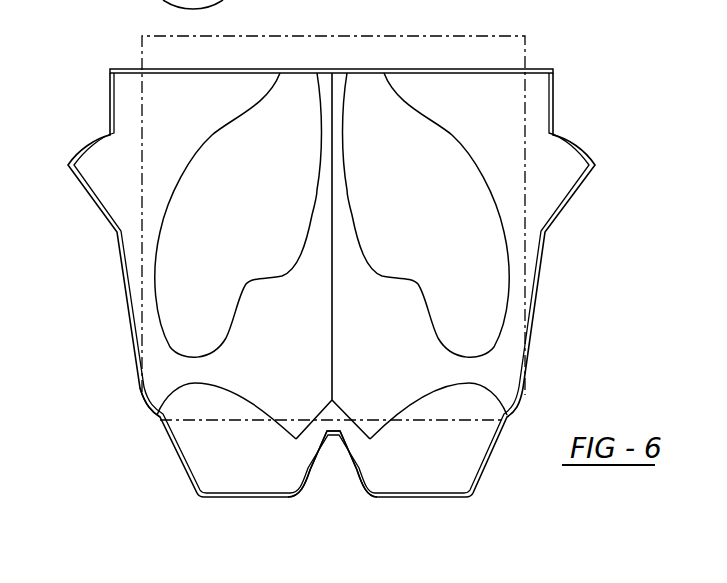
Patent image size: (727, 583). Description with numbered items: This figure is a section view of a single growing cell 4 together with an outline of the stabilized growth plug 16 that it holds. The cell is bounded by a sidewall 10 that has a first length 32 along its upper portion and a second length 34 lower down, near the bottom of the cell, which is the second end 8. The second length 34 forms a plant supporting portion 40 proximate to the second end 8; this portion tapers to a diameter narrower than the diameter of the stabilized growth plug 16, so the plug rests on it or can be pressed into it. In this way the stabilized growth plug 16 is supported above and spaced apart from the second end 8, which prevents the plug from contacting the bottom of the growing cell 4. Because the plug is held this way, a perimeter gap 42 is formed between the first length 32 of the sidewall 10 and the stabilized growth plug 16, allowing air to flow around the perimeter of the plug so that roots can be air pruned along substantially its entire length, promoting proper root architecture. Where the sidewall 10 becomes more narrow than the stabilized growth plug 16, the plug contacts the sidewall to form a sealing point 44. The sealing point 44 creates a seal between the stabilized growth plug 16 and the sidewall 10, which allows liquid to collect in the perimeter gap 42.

The growing cell 4 is at (496, 100).
The second end 8 is at (328, 498).
The sidewall 10 is at (543, 287).
The stabilized growth plug 16 is at (143, 50).
The first length 32 is at (122, 297).
The second length 34 is at (135, 372).
The plant supporting portion 40 is at (157, 393).
The perimeter gap 42 is at (138, 265).
The sealing point 44 is at (533, 363).